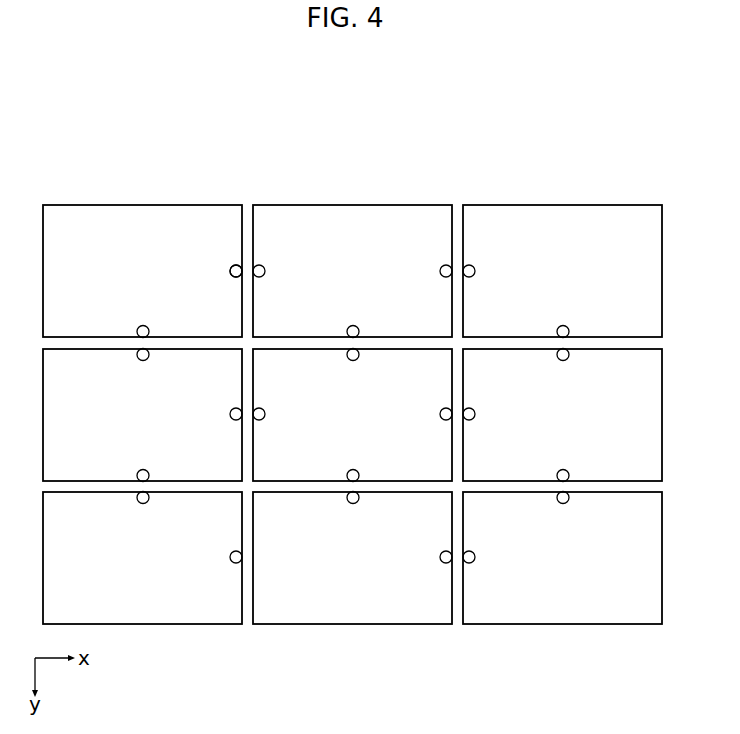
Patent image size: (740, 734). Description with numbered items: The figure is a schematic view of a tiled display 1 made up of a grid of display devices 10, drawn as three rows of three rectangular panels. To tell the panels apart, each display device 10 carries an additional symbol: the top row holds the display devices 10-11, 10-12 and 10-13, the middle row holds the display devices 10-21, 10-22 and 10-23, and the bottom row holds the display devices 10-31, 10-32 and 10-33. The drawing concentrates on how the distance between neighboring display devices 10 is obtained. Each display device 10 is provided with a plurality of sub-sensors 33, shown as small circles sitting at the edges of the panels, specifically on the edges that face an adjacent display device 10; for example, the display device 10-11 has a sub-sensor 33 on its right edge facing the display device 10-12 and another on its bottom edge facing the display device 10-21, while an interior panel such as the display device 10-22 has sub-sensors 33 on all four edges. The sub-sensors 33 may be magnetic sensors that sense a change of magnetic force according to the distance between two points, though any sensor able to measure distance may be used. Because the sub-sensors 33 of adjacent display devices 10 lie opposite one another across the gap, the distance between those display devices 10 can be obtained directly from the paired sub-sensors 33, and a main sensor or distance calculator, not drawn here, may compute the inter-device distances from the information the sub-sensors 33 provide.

The tiled display 1 is at (392, 168).
The display device 10 is at (576, 205).
The sub-sensor 33 is at (234, 265).
The display device 10-11 is at (142, 271).
The display device 10-12 is at (352, 271).
The display device 10-13 is at (562, 271).
The display device 10-21 is at (142, 415).
The display device 10-22 is at (352, 415).
The display device 10-23 is at (562, 415).
The display device 10-31 is at (142, 558).
The display device 10-32 is at (352, 558).
The display device 10-33 is at (562, 558).